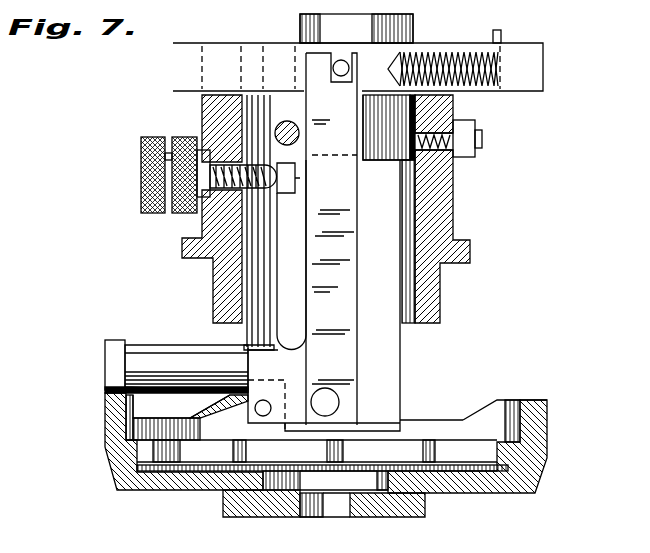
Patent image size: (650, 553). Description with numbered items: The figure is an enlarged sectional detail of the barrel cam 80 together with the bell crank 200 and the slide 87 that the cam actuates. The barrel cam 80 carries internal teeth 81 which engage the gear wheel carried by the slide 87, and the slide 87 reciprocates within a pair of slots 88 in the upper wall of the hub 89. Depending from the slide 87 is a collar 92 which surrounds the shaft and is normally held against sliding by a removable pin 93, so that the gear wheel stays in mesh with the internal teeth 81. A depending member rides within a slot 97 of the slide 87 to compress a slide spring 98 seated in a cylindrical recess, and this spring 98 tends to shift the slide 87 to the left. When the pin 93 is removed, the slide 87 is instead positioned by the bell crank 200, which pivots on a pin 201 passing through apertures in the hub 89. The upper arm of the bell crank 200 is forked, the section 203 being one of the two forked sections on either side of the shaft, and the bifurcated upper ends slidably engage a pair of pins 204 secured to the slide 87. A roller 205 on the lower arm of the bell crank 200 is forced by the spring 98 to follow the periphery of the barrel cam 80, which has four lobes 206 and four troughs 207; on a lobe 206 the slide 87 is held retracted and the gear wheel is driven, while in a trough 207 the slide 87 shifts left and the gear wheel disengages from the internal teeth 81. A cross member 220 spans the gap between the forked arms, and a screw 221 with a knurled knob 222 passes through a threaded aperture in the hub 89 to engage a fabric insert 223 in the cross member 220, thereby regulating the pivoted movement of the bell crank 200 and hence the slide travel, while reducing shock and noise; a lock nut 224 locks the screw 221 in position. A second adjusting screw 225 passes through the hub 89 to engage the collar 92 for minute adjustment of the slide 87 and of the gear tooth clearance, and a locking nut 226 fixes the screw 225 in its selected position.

The barrel cam 80 is at (535, 442).
The internal teeth 81 is at (480, 453).
The slide 87 is at (227, 52).
The slots 88 is at (202, 105).
The hub 89 is at (453, 197).
The collar 92 is at (385, 160).
The removable pin 93 is at (298, 128).
The slot 97 is at (528, 70).
The slide spring 98 is at (462, 50).
The bell crank 200 is at (186, 335).
The pin 201 is at (329, 388).
The forked section 203 is at (340, 322).
The pins 204 is at (341, 60).
The roller 205 is at (110, 364).
The lobes 206 is at (115, 428).
The troughs 207 is at (153, 408).
The cross member 220 is at (285, 298).
The screw 221 is at (270, 188).
The knurled knob 222 is at (141, 178).
The fabric insert 223 is at (290, 180).
The lock nut 224 is at (176, 214).
The second adjusting screw 225 is at (483, 143).
The locking nut 226 is at (468, 132).